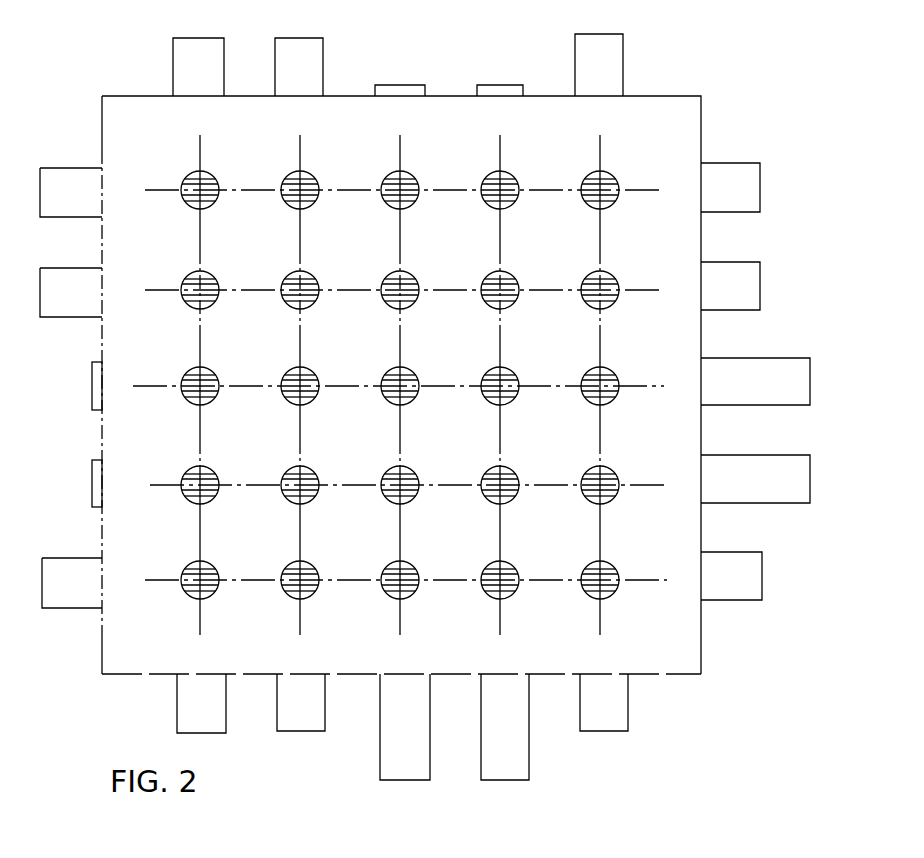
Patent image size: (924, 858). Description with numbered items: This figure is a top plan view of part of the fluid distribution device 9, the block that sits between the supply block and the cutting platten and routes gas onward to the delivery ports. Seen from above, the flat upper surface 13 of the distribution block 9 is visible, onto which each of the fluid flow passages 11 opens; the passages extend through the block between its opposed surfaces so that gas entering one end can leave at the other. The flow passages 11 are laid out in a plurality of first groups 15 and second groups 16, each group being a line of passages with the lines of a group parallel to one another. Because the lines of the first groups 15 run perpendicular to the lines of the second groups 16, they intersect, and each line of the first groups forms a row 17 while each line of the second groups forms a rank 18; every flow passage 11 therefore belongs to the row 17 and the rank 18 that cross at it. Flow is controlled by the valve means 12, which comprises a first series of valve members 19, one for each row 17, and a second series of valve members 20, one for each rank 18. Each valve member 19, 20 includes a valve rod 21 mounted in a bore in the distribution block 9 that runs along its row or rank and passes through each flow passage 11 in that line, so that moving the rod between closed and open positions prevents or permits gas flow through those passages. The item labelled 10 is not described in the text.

The distribution device 9 is at (97, 79).
The substrate body 10 is at (100, 125).
The fluid flow passages 11 is at (413, 207).
The valve means 12 is at (336, 60).
The upper surface 13 is at (691, 636).
The first groups 15 is at (395, 620).
The second groups 16 is at (174, 201).
The row 17 is at (600, 143).
The rank 18 is at (638, 195).
The first series of valve members 19 is at (573, 58).
The second series of valve members 20 is at (745, 213).
The valve rod 21 is at (192, 68).